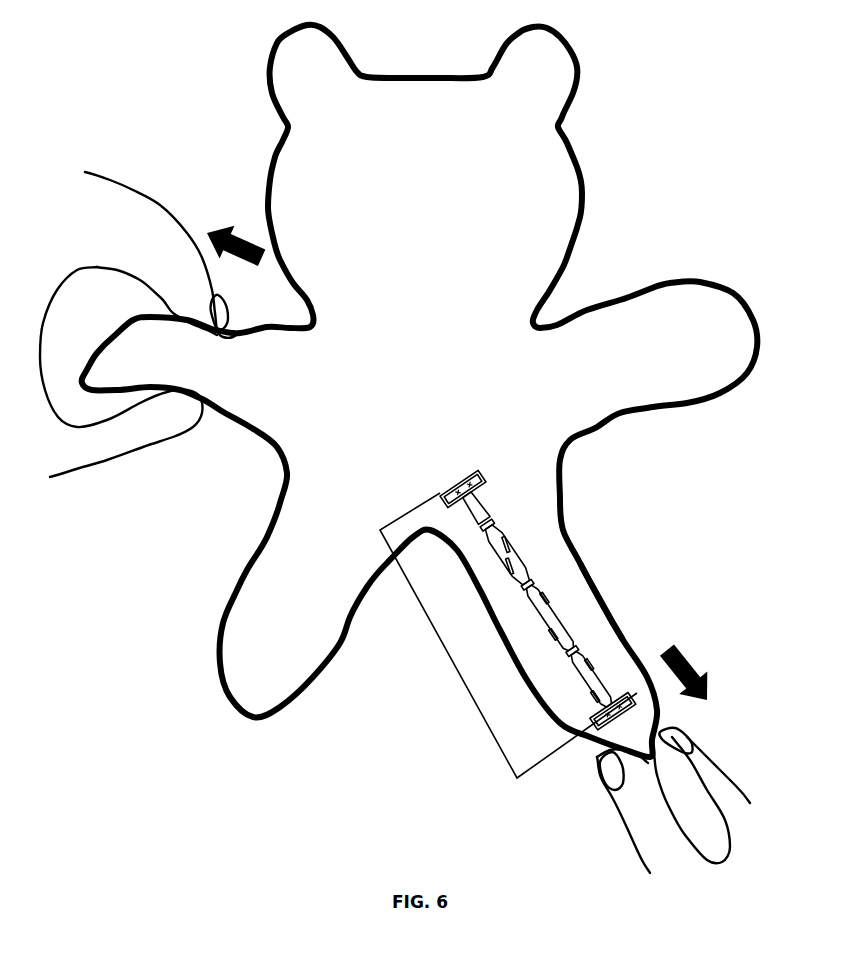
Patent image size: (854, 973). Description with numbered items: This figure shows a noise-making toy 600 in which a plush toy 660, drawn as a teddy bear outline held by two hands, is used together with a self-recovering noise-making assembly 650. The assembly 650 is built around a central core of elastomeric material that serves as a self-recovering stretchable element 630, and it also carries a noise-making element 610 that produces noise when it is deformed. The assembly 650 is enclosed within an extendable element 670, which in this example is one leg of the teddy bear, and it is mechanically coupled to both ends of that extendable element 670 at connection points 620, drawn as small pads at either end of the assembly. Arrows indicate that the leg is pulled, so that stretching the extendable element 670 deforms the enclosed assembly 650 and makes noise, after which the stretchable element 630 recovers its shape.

The noise-making toy 600 is at (434, 449).
The noise-making element 610 is at (520, 548).
The connection points 620 is at (480, 470).
The self-recovering stretchable element 630 is at (625, 580).
The self-recovering noise-making assembly 650 is at (508, 635).
The plush toy 660 is at (577, 230).
The extendable element 670 is at (607, 607).